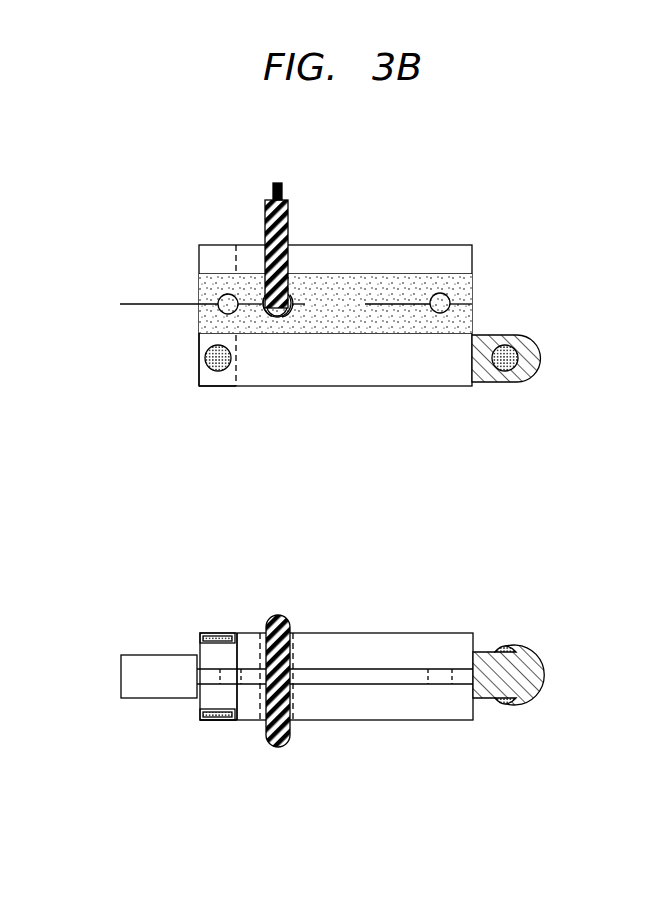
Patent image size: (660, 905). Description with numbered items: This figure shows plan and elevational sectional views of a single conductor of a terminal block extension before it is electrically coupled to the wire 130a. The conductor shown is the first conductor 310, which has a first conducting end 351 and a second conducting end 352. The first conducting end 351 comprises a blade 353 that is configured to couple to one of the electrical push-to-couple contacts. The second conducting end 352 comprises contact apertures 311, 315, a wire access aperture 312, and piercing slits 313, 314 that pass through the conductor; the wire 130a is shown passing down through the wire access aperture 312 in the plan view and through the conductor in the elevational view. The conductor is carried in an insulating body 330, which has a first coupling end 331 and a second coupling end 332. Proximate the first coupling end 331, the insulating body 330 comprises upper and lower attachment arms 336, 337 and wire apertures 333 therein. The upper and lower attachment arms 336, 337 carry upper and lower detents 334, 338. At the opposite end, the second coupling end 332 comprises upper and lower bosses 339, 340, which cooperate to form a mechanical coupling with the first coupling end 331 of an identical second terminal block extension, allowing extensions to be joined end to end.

The wire 130a is at (303, 203).
The first conductor 310 is at (438, 282).
The contact aperture 311 is at (225, 293).
The wire access aperture 312 is at (290, 295).
The piercing slit 313 is at (248, 305).
The piercing slit 314 is at (470, 305).
The contact aperture 315 is at (455, 302).
The insulating body 330 is at (410, 248).
The first coupling end 331 is at (240, 397).
The second coupling end 332 is at (540, 397).
The wire aperture 333 is at (290, 293).
The upper detent 334 is at (205, 358).
The upper attachment arm 336 is at (200, 378).
The lower attachment arm 337 is at (222, 722).
The lower detent 338 is at (217, 706).
The upper boss 339 is at (515, 650).
The lower boss 340 is at (515, 702).
The first conducting end 351 is at (197, 448).
The second conducting end 352 is at (478, 447).
The blade 353 is at (140, 303).